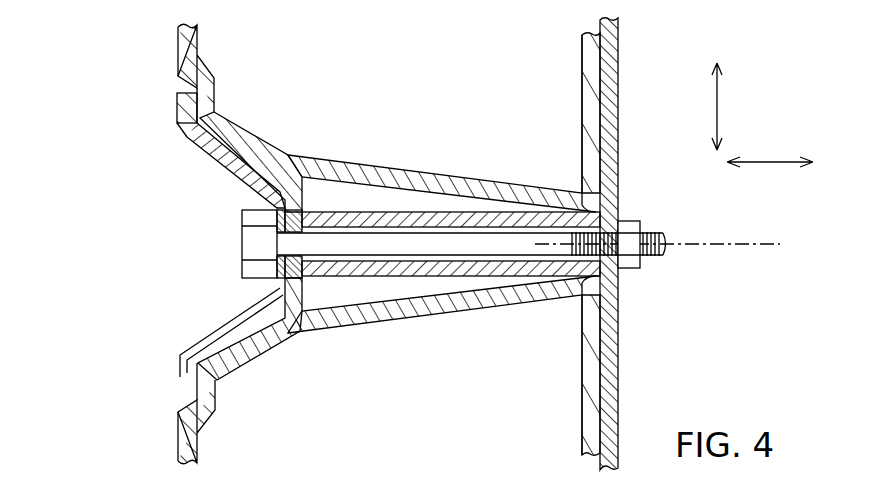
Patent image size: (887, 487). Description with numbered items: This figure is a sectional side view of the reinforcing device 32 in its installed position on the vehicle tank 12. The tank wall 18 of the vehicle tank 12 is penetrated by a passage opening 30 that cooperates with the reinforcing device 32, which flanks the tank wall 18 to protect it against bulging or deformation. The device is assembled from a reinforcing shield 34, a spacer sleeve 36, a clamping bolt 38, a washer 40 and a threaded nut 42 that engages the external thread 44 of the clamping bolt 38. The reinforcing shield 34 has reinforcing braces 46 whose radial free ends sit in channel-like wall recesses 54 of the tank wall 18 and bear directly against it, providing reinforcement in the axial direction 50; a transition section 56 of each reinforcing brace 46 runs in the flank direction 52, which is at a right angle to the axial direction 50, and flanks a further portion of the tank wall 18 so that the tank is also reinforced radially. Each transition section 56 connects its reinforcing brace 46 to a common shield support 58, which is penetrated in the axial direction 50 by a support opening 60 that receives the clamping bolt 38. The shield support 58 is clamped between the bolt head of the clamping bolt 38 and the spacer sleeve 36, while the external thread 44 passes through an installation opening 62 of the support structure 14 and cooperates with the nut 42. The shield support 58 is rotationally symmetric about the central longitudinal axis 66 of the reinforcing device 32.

The vehicle tank 12 is at (521, 180).
The support structure 14 is at (607, 124).
The tank wall 18 is at (185, 44).
The passage opening 30 is at (355, 168).
The reinforcing device 32 is at (128, 231).
The reinforcing shield 34 is at (238, 310).
The spacer sleeve 36 is at (412, 212).
The clamping bolt 38 is at (237, 240).
The washer 40 is at (277, 208).
The threaded nut 42 is at (632, 215).
The external thread 44 is at (653, 260).
The reinforcing brace 46 is at (187, 106).
The axial direction 50 is at (772, 160).
The flank direction 52 is at (717, 108).
The wall recess 54 is at (180, 80).
The transition section 56 is at (237, 147).
The shield support 58 is at (305, 212).
The support opening 60 is at (305, 254).
The installation opening 62 is at (617, 290).
The central longitudinal axis 66 is at (713, 247).